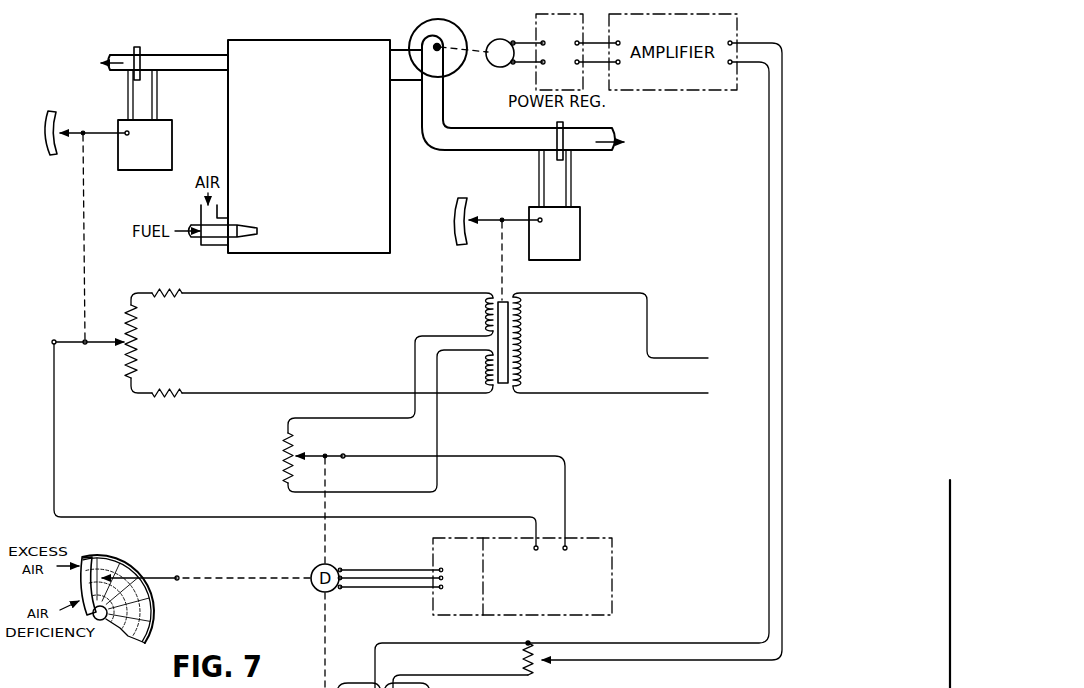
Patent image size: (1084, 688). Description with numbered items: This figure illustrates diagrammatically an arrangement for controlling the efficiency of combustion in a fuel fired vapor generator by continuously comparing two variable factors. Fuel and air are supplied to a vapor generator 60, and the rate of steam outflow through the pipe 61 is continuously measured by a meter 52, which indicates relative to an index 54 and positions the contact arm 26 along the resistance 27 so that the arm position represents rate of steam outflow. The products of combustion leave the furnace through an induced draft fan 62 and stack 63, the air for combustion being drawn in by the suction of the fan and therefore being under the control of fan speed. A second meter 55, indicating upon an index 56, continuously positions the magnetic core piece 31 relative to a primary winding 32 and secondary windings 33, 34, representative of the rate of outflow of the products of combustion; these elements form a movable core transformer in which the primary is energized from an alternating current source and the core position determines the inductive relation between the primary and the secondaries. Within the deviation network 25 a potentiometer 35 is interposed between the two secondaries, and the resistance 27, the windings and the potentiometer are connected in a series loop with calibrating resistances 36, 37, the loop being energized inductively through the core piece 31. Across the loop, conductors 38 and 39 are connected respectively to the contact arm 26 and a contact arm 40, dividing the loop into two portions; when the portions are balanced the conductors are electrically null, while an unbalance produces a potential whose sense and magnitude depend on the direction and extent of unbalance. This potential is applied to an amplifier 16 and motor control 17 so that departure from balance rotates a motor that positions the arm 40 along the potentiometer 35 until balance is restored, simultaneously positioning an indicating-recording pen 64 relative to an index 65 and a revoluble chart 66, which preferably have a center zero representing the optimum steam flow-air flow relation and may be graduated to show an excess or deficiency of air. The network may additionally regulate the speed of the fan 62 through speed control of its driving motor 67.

The amplifier 16 is at (522, 576).
The motor control 17 is at (455, 588).
The deviation network 25 is at (316, 352).
The contact arm 26 is at (101, 345).
The resistance 27 is at (140, 350).
The magnetic core piece 31 is at (505, 385).
The primary winding 32 is at (610, 343).
The secondary winding 33 is at (390, 365).
The secondary winding 34 is at (390, 421).
The potentiometer 35 is at (289, 431).
The calibrating resistance 36 is at (322, 305).
The calibrating resistance 37 is at (322, 383).
The conductor 38 is at (470, 517).
The conductor 39 is at (463, 455).
The contact arm 40 is at (327, 452).
The meter 52 is at (116, 145).
The index 54 is at (46, 153).
The meter 55 is at (524, 205).
The index 56 is at (456, 244).
The vapor generator 60 is at (325, 136).
The pipe 61 is at (186, 72).
The induced draft fan 62 is at (452, 68).
The stack 63 is at (455, 152).
The indicating-recording pen 64 is at (153, 576).
The index 65 is at (88, 557).
The revoluble chart 66 is at (150, 618).
The driving motor 67 is at (498, 38).